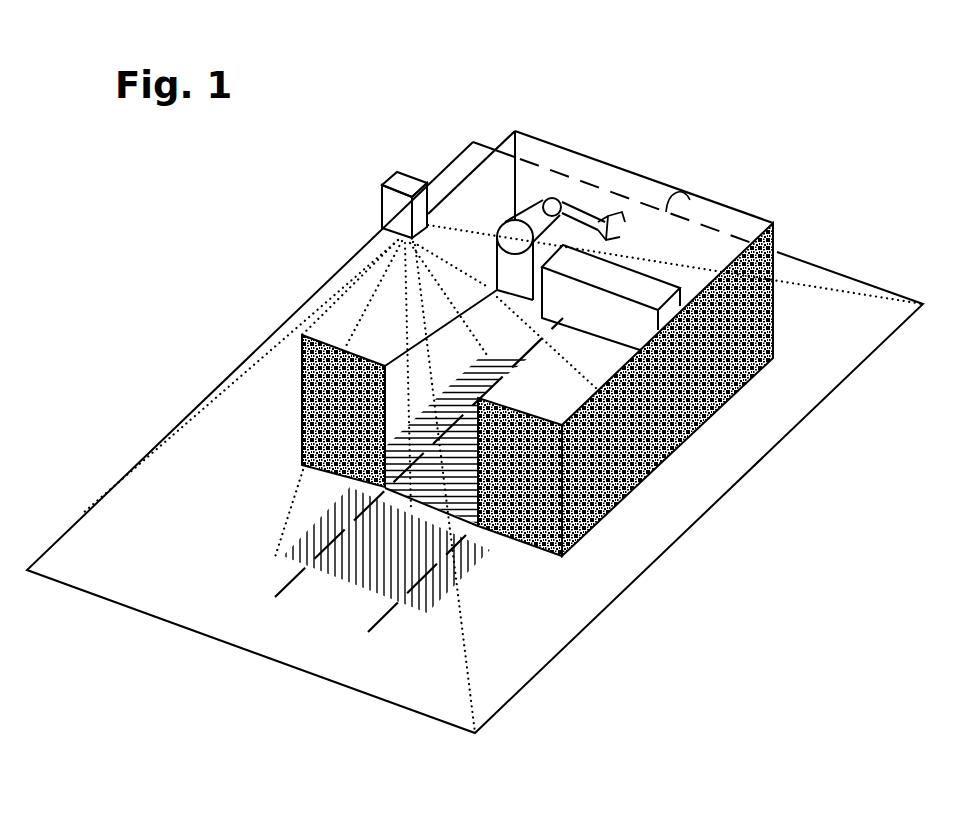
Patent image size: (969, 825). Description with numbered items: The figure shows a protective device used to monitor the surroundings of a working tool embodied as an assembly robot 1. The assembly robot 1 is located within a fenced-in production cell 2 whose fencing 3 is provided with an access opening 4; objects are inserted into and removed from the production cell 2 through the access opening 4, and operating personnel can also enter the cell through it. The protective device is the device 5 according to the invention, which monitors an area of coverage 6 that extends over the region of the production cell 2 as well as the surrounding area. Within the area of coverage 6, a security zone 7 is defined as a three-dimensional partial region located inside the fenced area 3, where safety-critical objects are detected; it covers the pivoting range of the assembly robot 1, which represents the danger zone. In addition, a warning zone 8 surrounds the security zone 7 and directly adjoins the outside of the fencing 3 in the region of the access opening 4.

The assembly robot 1 is at (568, 197).
The production cell 2 is at (679, 461).
The fencing 3 is at (302, 398).
The access opening 4 is at (443, 521).
The device 5 is at (398, 183).
The area of coverage 6 is at (147, 576).
The security zone 7 is at (553, 413).
The warning zone 8 is at (385, 581).